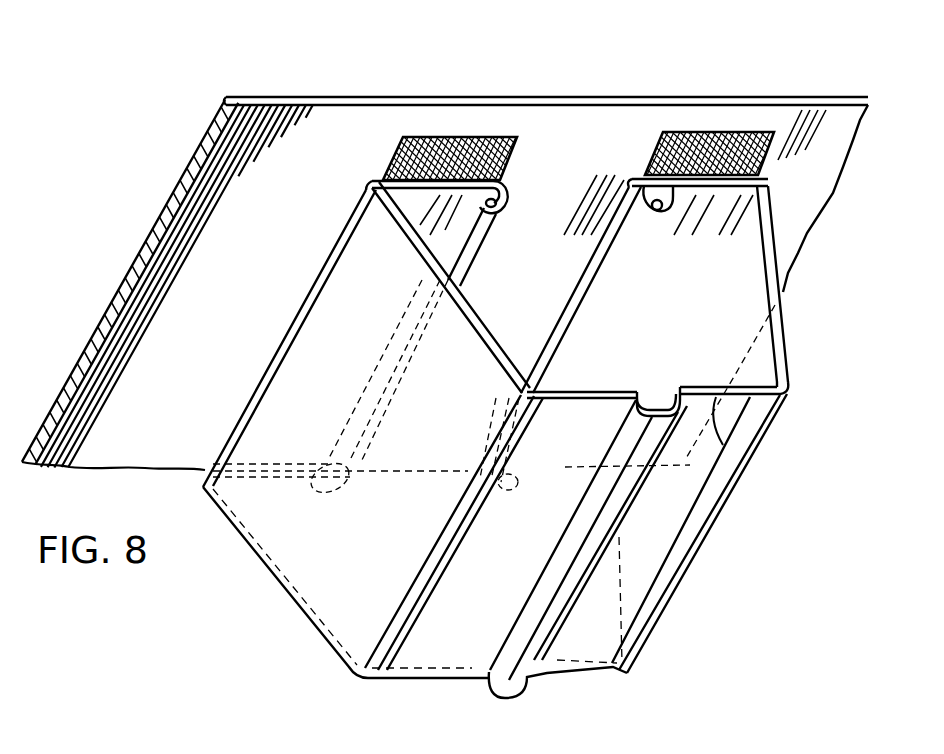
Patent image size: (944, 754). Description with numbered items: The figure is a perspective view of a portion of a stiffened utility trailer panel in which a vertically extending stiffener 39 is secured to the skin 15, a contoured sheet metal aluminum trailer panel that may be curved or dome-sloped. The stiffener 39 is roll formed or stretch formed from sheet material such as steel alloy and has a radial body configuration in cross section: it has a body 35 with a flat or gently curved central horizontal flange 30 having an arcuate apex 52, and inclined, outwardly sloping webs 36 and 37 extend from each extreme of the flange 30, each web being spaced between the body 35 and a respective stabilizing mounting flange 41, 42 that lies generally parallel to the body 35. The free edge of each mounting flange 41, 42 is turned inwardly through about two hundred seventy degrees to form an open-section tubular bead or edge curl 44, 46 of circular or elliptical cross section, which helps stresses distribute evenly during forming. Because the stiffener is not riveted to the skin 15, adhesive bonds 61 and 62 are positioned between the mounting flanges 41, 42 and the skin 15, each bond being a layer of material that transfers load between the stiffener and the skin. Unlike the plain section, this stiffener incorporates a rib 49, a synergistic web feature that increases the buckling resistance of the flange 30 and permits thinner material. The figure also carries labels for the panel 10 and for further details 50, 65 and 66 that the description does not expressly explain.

The panel 10 is at (584, 95).
The skin 15 is at (312, 97).
The central horizontal flange 30 is at (735, 399).
The body 35 is at (690, 547).
The web 36 is at (327, 557).
The web 37 is at (787, 318).
The stiffener 39 is at (750, 494).
The mounting flange 41 is at (505, 178).
The mounting flange 42 is at (772, 172).
The tubular bead 44 is at (470, 258).
The tubular bead 46 is at (586, 266).
The rib 49 is at (605, 522).
The hook end 50 is at (728, 418).
The arcuate apex 52 is at (662, 390).
The adhesive bond 61 is at (452, 136).
The adhesive bond 62 is at (729, 133).
The corner 65 is at (792, 372).
The lower edge 66 is at (325, 652).